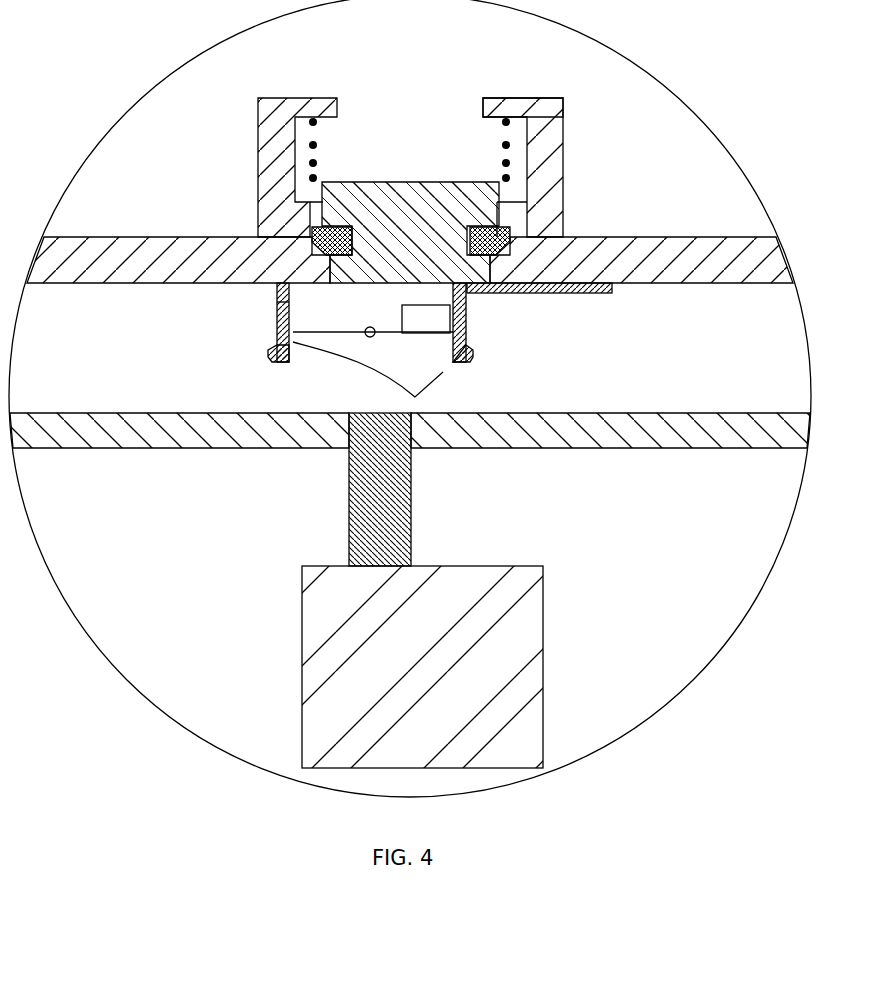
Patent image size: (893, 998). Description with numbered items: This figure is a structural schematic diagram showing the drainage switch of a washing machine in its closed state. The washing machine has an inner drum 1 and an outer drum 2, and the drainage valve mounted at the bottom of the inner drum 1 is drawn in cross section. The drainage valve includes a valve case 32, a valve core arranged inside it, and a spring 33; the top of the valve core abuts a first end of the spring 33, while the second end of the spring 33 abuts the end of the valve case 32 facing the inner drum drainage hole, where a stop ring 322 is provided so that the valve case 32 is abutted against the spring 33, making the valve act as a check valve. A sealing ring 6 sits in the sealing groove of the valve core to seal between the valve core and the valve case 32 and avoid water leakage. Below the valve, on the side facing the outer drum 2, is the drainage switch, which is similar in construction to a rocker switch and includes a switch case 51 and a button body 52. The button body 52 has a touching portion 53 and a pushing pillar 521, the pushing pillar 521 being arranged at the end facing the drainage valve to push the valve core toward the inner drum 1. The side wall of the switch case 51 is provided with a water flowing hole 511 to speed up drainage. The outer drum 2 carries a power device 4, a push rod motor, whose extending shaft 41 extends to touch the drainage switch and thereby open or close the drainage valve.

The inner drum 1 is at (667, 283).
The outer drum 2 is at (662, 448).
The power device 4 is at (525, 635).
The extending shaft 41 is at (349, 507).
The sealing ring 6 is at (311, 231).
The valve case 32 is at (447, 131).
The stop ring 322 is at (510, 98).
The spring 33 is at (318, 144).
The switch case 51 is at (472, 348).
The water flowing hole 511 is at (470, 305).
The button body 52 is at (268, 347).
The pushing pillar 521 is at (413, 320).
The touching portion 53 is at (427, 372).